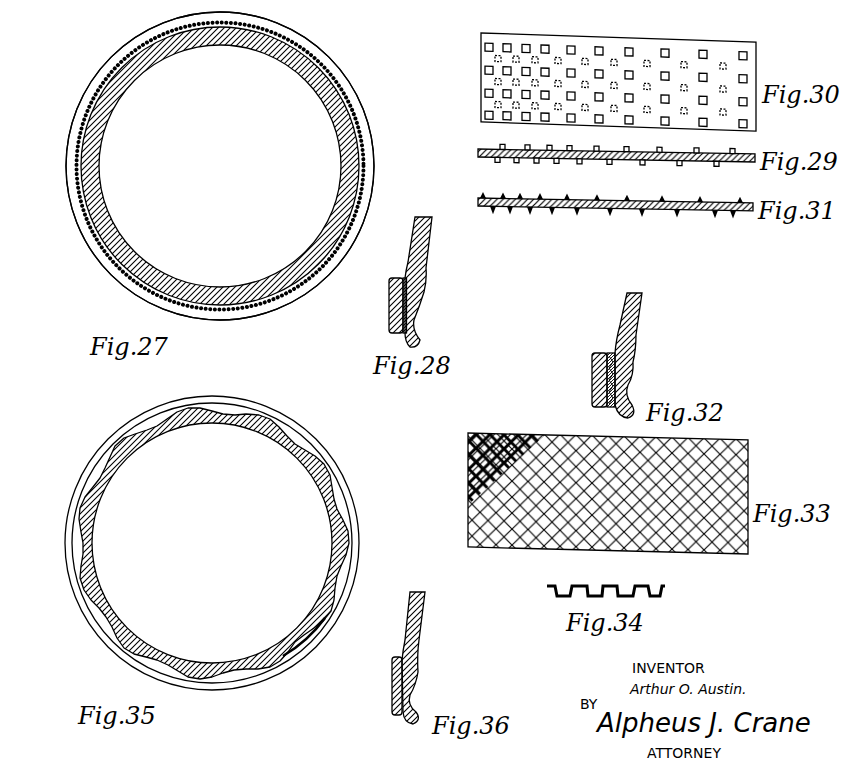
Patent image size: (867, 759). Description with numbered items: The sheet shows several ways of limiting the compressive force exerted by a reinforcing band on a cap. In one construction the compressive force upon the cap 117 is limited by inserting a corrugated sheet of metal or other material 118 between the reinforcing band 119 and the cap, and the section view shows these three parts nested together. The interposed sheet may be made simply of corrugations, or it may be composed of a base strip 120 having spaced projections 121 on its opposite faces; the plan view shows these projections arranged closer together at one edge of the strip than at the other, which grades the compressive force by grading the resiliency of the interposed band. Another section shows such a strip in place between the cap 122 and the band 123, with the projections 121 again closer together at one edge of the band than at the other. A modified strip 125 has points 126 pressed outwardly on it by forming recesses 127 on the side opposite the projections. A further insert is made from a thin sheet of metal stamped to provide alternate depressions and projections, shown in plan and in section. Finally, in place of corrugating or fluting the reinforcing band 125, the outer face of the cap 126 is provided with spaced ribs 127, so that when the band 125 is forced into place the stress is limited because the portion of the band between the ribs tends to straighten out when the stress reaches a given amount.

In FIG. 27, the cap 117 is at (165, 278).
In FIG. 28, the cap 117 is at (423, 262).
In FIG. 27, the corrugated sheet 118 is at (262, 300).
In FIG. 28, the corrugated sheet 118 is at (404, 278).
In FIG. 27, the reinforcing band 119 is at (371, 160).
In FIG. 28, the reinforcing band 119 is at (389, 322).
In FIG. 30, the base strip 120 is at (481, 77).
In FIG. 32, the base strip 120 is at (612, 353).
In FIG. 30, the projections 121 is at (600, 42).
In FIG. 29, the projections 121 is at (569, 149).
In FIG. 32, the projections 121 is at (612, 378).
In FIG. 32, the cap 122 is at (630, 322).
In FIG. 32, the band 123 is at (592, 368).
In FIG. 31, the strip 125 is at (690, 208).
In FIG. 35, the strip 125 is at (356, 540).
In FIG. 36, the strip 125 is at (389, 694).
In FIG. 31, the points 126 is at (596, 198).
In FIG. 35, the points 126 is at (178, 667).
In FIG. 36, the points 126 is at (418, 630).
In FIG. 31, the recesses 127 is at (633, 212).
In FIG. 35, the recesses 127 is at (321, 620).